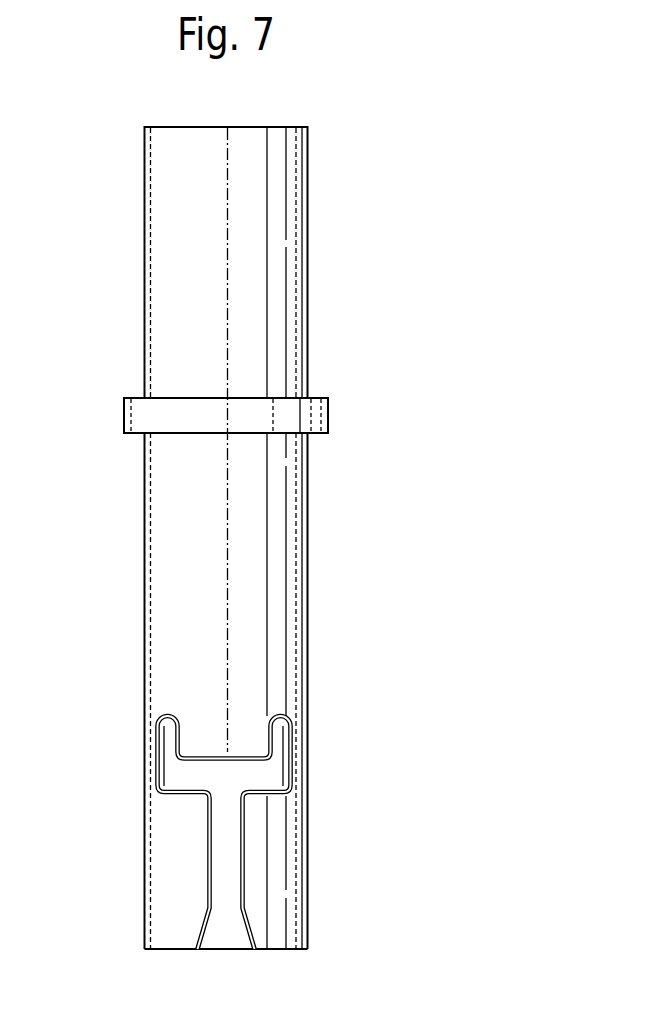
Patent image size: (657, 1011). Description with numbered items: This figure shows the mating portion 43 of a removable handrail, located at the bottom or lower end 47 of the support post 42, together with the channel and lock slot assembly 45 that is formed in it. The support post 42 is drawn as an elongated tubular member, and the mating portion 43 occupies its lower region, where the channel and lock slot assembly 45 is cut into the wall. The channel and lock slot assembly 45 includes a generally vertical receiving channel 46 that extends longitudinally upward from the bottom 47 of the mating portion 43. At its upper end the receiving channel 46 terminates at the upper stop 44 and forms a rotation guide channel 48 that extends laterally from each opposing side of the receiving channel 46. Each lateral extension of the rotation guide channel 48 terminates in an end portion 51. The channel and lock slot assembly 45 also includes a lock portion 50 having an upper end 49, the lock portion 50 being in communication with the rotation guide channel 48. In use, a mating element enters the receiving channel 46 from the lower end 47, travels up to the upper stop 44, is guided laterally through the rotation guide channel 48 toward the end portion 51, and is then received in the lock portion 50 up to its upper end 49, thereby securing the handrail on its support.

The support post 42 is at (326, 309).
The mating portion 43 is at (308, 622).
The upper stop 44 is at (243, 752).
The channel and lock slot assembly 45 is at (309, 777).
The receiving channel 46 is at (244, 879).
The lower end 47 is at (291, 949).
The rotation guide channel 48 is at (249, 800).
The upper end 49 is at (167, 717).
The lock portion 50 is at (160, 732).
The end portion 51 is at (157, 774).